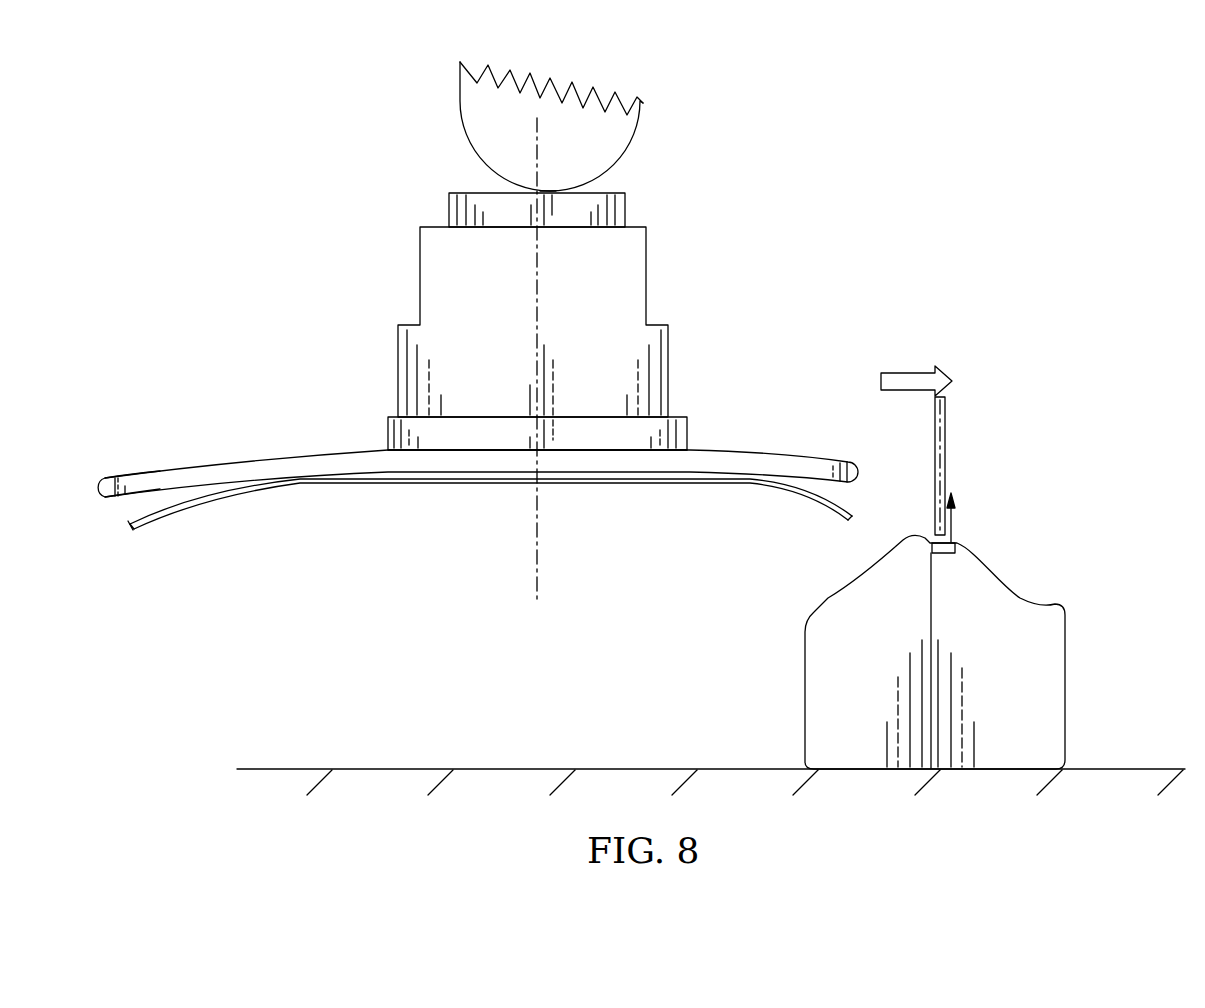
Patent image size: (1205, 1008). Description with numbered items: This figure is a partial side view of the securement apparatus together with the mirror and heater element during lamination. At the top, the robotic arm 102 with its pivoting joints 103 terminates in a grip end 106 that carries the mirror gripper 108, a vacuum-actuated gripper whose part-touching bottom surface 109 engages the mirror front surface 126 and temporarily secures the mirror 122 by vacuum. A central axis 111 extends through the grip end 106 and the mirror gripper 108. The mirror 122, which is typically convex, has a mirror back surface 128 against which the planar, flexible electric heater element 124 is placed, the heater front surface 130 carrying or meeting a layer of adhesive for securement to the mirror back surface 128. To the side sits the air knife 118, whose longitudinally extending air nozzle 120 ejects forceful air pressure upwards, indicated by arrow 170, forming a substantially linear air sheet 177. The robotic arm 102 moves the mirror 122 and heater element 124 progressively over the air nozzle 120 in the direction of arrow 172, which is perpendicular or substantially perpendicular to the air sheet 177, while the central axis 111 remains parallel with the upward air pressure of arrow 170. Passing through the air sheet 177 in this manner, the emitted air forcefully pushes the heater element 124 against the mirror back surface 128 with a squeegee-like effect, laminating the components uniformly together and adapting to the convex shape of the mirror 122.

The robotic arm 102 is at (628, 135).
The pivoting joints 103 is at (548, 192).
The grip end 106 is at (641, 265).
The mirror gripper 108 is at (685, 427).
The bottom surface 109 is at (440, 453).
The central axis 111 is at (538, 297).
The air knife 118 is at (1084, 699).
The air nozzle 120 is at (945, 556).
The mirror 122 is at (283, 460).
The electric heater element 124 is at (562, 481).
The mirror front surface 126 is at (143, 470).
The mirror back surface 128 is at (120, 500).
The heater front surface 130 is at (152, 505).
The arrow 170 is at (953, 520).
The arrow 172 is at (905, 372).
The air sheet 177 is at (947, 450).